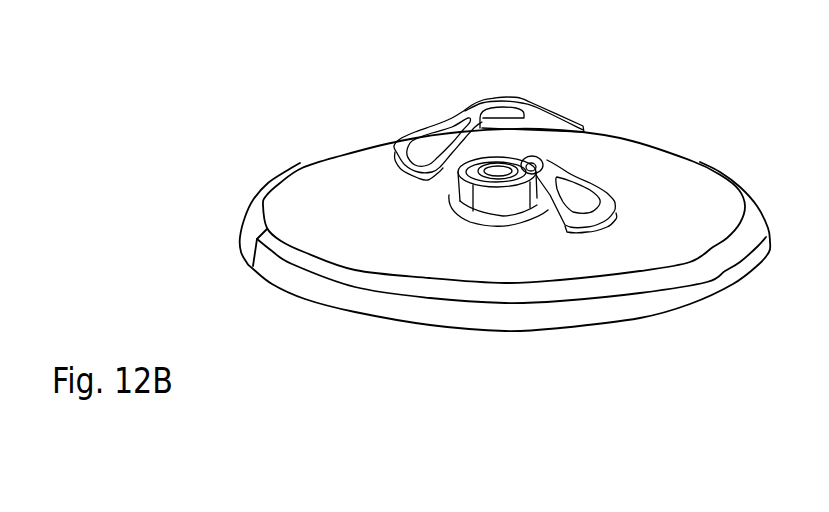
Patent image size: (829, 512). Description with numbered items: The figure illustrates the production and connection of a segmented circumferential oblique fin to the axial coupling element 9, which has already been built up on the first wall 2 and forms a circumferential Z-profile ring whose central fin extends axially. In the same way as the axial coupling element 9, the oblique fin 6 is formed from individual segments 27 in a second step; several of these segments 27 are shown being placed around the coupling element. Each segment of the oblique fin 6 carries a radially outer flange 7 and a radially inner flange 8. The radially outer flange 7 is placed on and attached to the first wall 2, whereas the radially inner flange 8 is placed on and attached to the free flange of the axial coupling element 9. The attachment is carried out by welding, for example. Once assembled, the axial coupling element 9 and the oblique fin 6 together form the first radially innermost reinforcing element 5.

The first wall 2 is at (308, 192).
The first radially innermost reinforcing element 5 is at (498, 125).
The oblique fin 6 is at (573, 198).
The radially outer flange 7 is at (605, 202).
The radially inner flange 8 is at (533, 163).
The axial coupling element 9 is at (498, 190).
The segments 27 is at (440, 139).